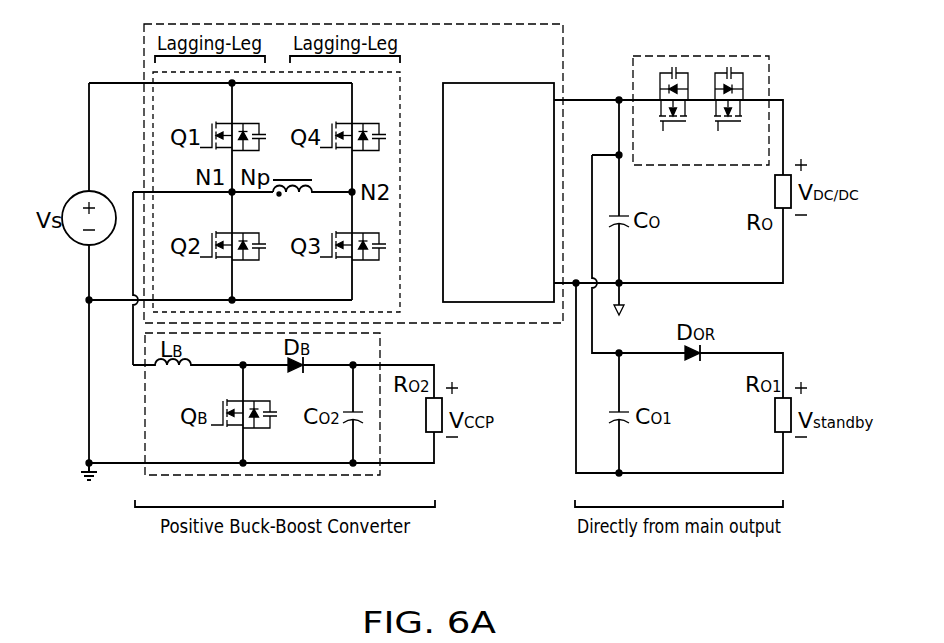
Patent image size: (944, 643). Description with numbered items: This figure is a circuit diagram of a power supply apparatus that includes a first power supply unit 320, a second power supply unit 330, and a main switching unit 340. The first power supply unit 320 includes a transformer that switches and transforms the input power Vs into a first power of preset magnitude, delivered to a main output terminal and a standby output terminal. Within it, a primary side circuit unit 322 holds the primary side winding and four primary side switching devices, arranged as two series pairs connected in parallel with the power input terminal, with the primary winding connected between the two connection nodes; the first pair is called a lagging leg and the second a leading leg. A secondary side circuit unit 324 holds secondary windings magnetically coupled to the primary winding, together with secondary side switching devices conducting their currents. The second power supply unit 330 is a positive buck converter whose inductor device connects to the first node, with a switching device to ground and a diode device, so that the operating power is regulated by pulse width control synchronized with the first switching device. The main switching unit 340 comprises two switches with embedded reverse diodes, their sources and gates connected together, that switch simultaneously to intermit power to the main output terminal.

The first power supply unit 320 is at (144, 45).
The primary side circuit unit 322 is at (154, 129).
The secondary side circuit unit 324 is at (478, 83).
The second power supply unit 330 is at (145, 414).
The main switching unit 340 is at (769, 70).